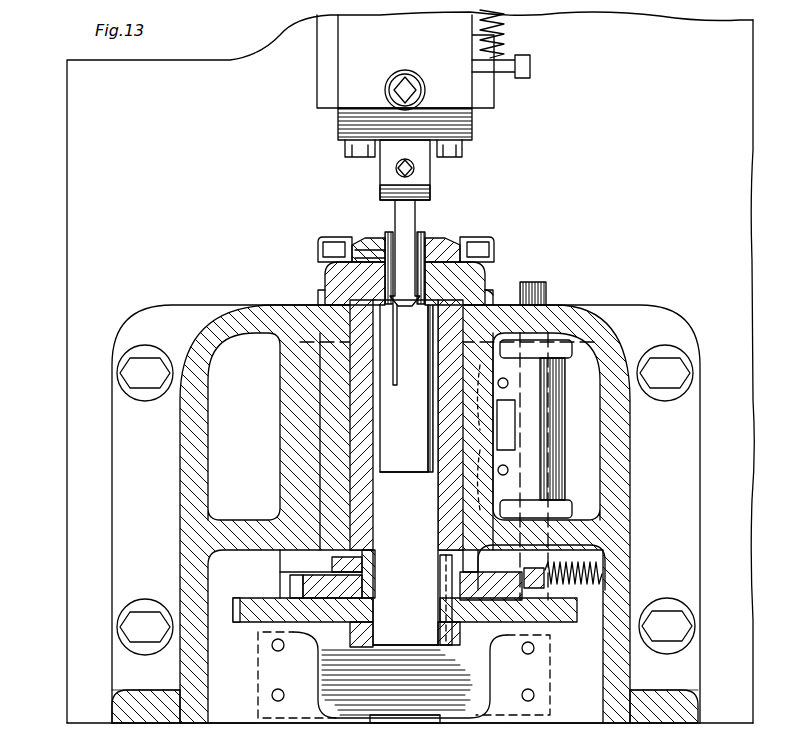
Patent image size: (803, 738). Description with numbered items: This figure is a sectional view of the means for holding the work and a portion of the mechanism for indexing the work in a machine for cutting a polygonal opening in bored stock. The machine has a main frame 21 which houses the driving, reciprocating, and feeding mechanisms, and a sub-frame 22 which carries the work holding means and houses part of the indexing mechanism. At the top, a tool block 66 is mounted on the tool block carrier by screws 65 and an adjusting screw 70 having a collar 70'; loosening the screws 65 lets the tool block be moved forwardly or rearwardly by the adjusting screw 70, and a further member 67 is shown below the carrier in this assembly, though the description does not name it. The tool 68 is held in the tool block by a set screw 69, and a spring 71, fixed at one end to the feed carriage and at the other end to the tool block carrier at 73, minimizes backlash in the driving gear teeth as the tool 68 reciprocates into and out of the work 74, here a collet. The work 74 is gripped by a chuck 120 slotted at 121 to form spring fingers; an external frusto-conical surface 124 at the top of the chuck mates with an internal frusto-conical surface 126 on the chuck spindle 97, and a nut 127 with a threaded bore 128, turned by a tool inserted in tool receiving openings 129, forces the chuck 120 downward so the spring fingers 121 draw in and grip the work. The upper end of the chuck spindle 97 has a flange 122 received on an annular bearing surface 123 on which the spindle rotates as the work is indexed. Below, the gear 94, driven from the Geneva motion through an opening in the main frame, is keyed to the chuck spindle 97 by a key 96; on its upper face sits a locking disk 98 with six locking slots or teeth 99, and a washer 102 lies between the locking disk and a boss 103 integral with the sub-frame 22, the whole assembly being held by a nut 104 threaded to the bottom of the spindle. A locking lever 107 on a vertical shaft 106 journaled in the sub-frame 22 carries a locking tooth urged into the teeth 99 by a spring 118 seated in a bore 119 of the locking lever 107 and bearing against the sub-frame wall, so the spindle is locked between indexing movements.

The main frame 21 is at (410, 367).
The sub-frame 22 is at (626, 460).
The screws 65 is at (345, 150).
The tool block 66 is at (382, 168).
The housing base 67 is at (338, 118).
The tool 68 is at (403, 222).
The set screw 69 is at (416, 168).
The adjusting screw 70 is at (405, 62).
The collar 70' is at (429, 89).
The spring 71 is at (506, 42).
The spring end fixing point 73 is at (531, 65).
The work 74 is at (424, 242).
The gear 94 is at (256, 608).
The key 96 is at (444, 600).
The chuck spindle 97 is at (373, 603).
The locking disk 98 is at (292, 585).
The locking slots or teeth 99 is at (292, 594).
The washer 102 is at (332, 562).
The boss 103 is at (274, 505).
The nut 104 is at (472, 670).
The vertical shaft 106 is at (548, 305).
The locking lever 107 is at (528, 596).
The spring 118 is at (600, 570).
The bore 119 is at (556, 548).
The chuck 120 is at (382, 402).
The slots or spring fingers 121 is at (395, 330).
The flange 122 is at (330, 278).
The annular bearing surface 123 is at (488, 290).
The external frusto-conical surface 124 is at (434, 252).
The internal frusto-conical surface 126 is at (472, 250).
The nut 127 is at (345, 240).
The threaded bore 128 is at (362, 246).
The tool receiving openings 129 is at (330, 250).